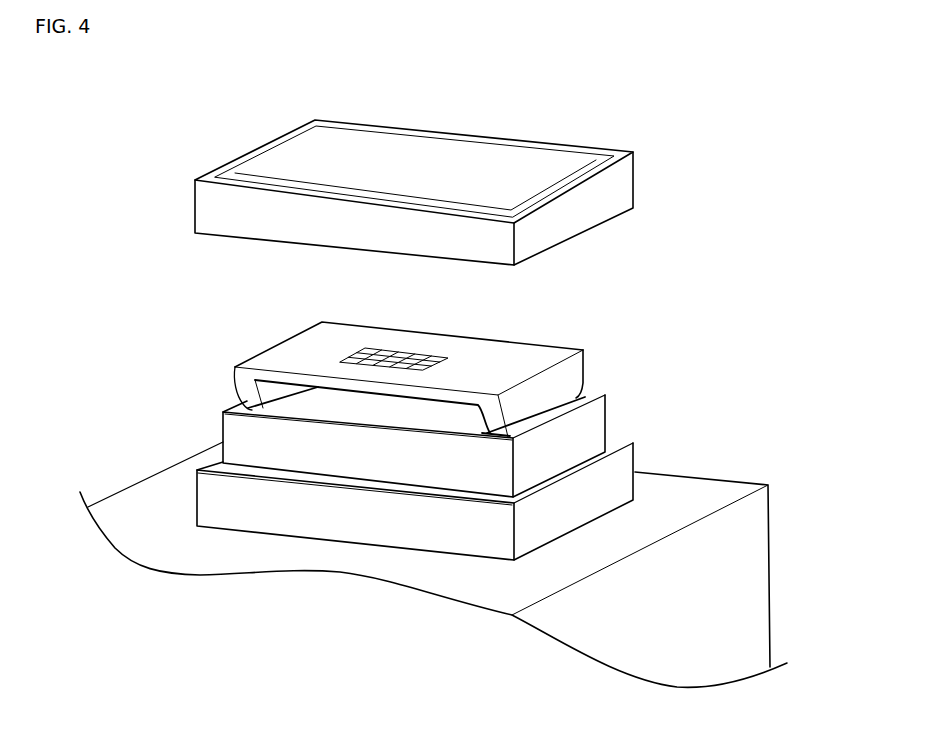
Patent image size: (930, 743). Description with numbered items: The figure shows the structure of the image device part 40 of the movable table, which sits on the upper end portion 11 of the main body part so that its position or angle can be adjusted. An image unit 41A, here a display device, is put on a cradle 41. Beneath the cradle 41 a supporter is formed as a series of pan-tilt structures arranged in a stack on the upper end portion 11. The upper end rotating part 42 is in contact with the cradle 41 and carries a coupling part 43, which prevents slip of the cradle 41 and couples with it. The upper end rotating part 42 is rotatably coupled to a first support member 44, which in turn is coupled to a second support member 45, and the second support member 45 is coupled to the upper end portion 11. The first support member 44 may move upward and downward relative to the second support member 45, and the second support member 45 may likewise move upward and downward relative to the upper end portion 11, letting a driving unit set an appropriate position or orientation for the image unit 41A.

The upper end portion 11 is at (456, 564).
The image device part 40 is at (777, 300).
The cradle 41 is at (457, 173).
The image unit 41A is at (415, 146).
The upper end rotating part 42 is at (409, 359).
The coupling part 43 is at (394, 322).
The first support member 44 is at (445, 434).
The second support member 45 is at (444, 490).